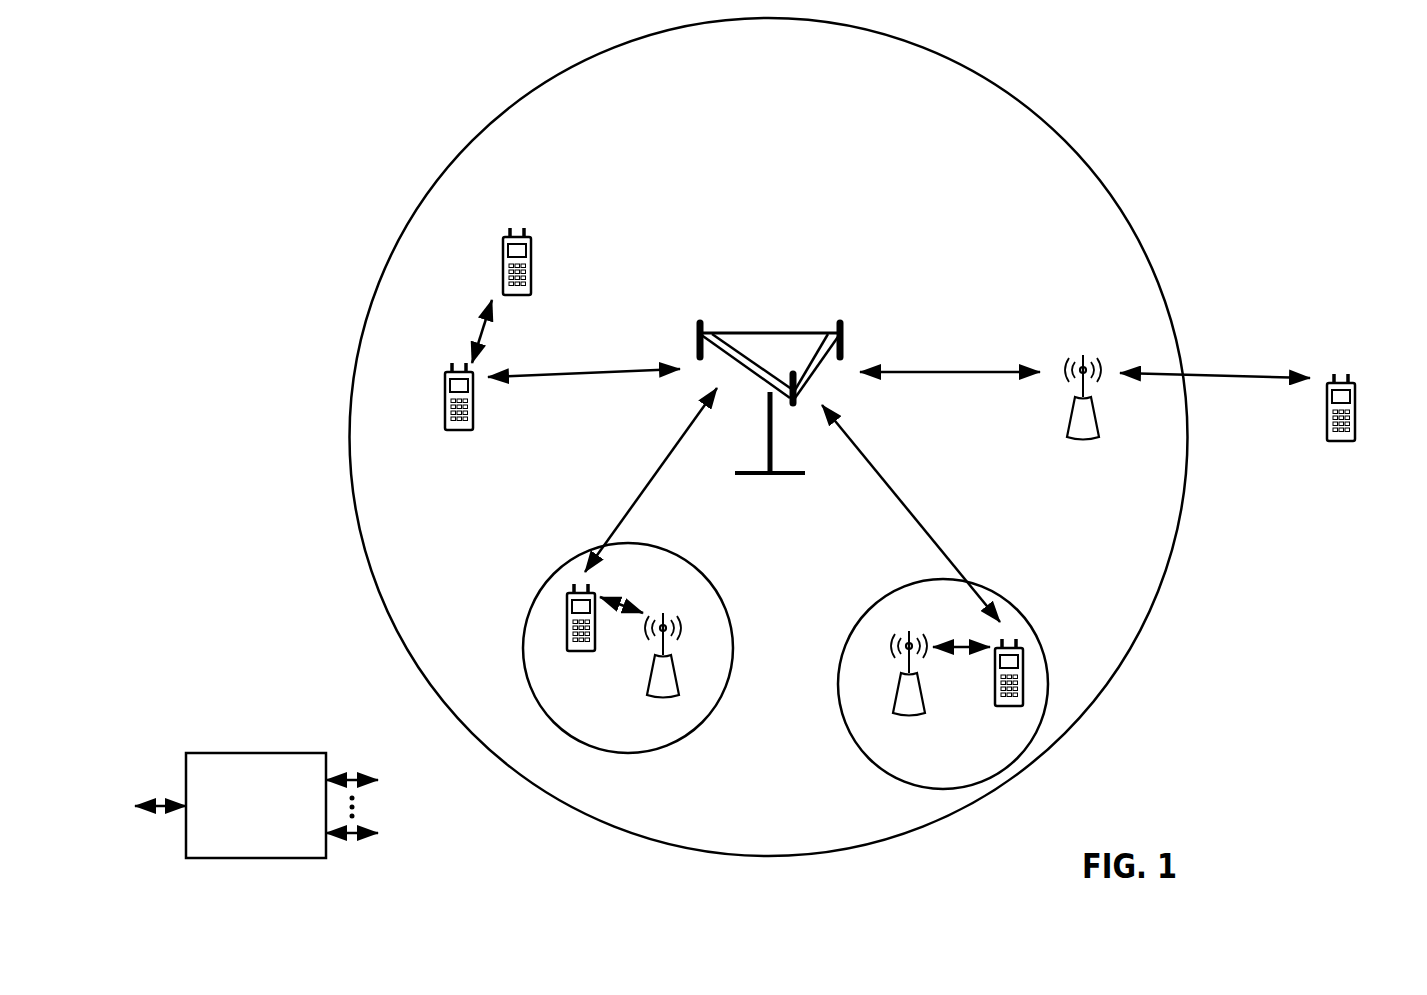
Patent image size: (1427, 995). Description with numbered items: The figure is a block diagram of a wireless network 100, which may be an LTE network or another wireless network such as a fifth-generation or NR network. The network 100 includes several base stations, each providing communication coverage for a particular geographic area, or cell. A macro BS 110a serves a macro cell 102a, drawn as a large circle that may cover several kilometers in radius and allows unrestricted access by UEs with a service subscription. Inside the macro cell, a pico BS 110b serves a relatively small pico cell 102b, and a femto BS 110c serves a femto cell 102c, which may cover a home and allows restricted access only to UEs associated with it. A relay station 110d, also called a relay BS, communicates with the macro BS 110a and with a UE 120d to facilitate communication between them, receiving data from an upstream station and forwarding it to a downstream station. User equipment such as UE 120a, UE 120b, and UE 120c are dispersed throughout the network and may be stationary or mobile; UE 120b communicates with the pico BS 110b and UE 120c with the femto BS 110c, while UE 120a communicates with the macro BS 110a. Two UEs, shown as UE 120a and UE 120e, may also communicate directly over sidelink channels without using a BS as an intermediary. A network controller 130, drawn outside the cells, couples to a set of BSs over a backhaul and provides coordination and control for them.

The wireless network 100 is at (1243, 103).
The macro cell 102a is at (1051, 126).
The pico cell 102b is at (722, 564).
The femto cell 102c is at (862, 612).
The macro BS 110a is at (766, 332).
The pico BS 110b is at (682, 677).
The femto BS 110c is at (893, 701).
The relay station 110d is at (1093, 345).
The UE 120a is at (445, 390).
The UE 120b is at (570, 643).
The UE 120c is at (996, 694).
The UE 120d is at (1368, 385).
The UE 120e is at (504, 252).
The network controller 130 is at (253, 753).